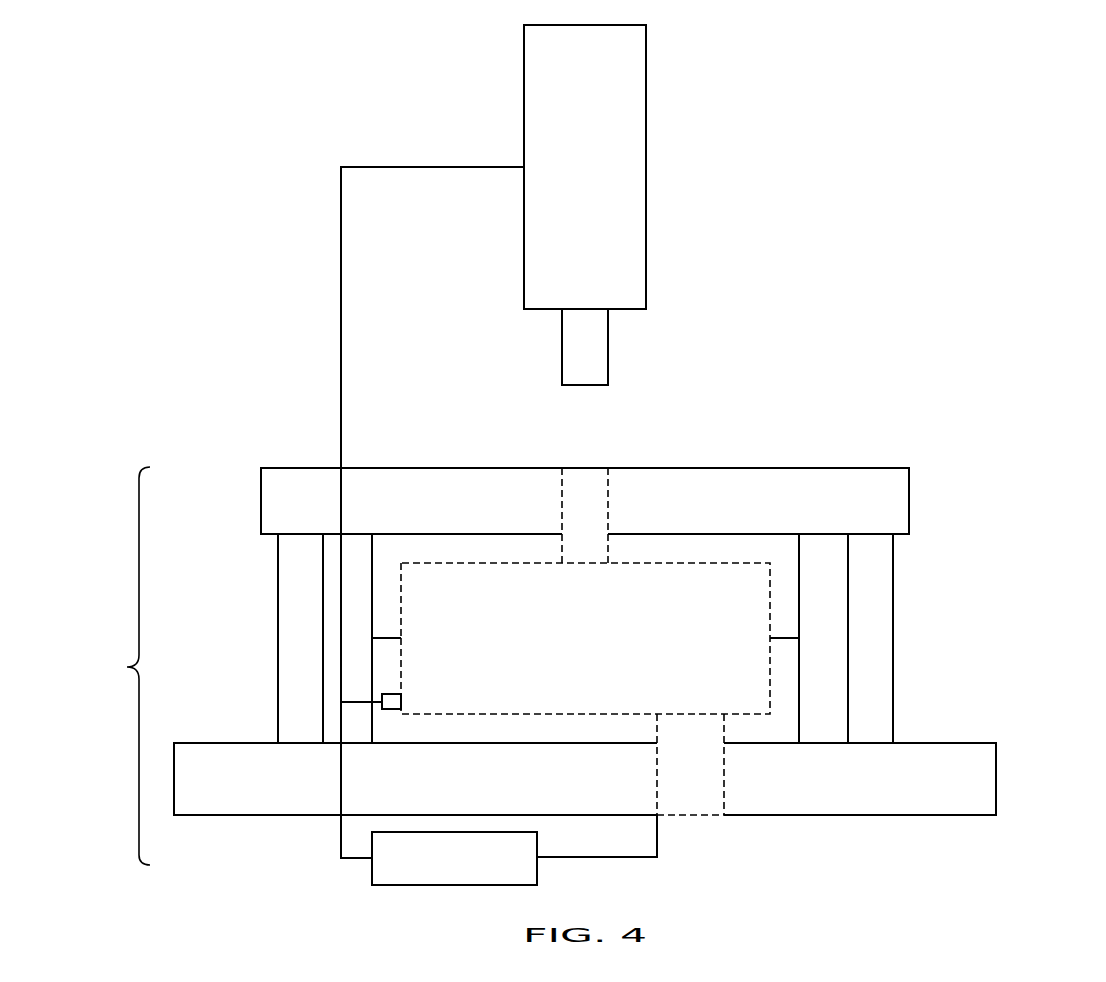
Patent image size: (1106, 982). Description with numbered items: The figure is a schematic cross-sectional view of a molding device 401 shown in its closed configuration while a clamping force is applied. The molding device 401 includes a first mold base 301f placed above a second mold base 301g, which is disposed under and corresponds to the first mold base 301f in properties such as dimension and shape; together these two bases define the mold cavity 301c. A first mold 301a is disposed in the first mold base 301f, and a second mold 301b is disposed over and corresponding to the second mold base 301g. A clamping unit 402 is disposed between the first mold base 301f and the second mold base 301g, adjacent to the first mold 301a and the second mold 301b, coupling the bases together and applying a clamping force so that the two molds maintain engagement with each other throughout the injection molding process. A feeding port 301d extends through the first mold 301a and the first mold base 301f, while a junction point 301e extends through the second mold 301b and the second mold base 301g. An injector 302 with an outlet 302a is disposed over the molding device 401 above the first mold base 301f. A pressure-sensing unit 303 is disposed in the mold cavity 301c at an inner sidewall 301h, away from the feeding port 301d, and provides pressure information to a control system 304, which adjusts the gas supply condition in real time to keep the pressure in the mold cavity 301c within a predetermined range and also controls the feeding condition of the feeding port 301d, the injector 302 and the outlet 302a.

The injector 302 is at (604, 185).
The outlet 302a is at (574, 347).
The first mold base 301f is at (895, 500).
The feeding port 301d is at (585, 478).
The clamping unit 402 is at (290, 637).
The molding device 401 is at (468, 666).
The first mold 301a is at (783, 597).
The second mold 301b is at (783, 693).
The mold cavity 301c is at (610, 655).
The inner sidewall 301h is at (405, 588).
The pressure-sensing unit 303 is at (400, 700).
The second mold base 301g is at (985, 778).
The junction point 301e is at (690, 800).
The control system 304 is at (474, 873).